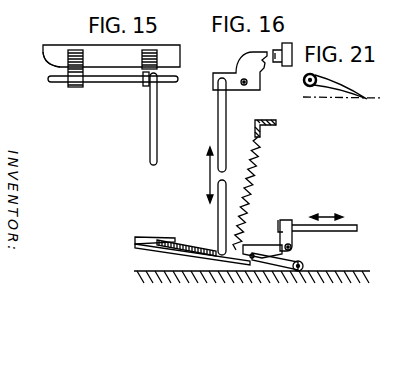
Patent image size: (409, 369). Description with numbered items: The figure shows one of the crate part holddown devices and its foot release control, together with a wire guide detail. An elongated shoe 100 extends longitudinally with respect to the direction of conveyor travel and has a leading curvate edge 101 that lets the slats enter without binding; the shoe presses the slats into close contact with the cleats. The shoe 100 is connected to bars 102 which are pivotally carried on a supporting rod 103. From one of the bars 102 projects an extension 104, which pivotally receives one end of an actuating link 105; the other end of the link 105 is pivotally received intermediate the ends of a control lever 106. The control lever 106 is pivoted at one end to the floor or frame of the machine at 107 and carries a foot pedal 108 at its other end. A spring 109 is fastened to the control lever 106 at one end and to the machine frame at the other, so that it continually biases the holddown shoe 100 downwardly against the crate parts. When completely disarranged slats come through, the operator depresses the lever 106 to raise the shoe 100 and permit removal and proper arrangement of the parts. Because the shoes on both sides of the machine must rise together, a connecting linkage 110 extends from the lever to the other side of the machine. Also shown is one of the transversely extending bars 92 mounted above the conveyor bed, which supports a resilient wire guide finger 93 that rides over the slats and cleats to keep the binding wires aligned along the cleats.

In FIG. 15, the elongated shoe 100 is at (92, 54).
In FIG. 15, the leading curvate edge 101 is at (44, 58).
In FIG. 15, the bar 102 is at (140, 69).
In FIG. 15, the supporting rod 103 is at (63, 85).
In FIG. 16, the extension 104 is at (228, 75).
In FIG. 15, the actuating link 105 is at (158, 123).
In FIG. 16, the actuating link 105 is at (226, 116).
In FIG. 16, the control lever 106 is at (198, 252).
In FIG. 16, the pivot 107 is at (308, 265).
In FIG. 16, the foot pedal 108 is at (152, 238).
In FIG. 16, the spring 109 is at (254, 184).
In FIG. 16, the connecting linkage 110 is at (306, 219).
In FIG. 21, the bar 92 is at (303, 77).
In FIG. 21, the resilient wire guide finger 93 is at (347, 88).